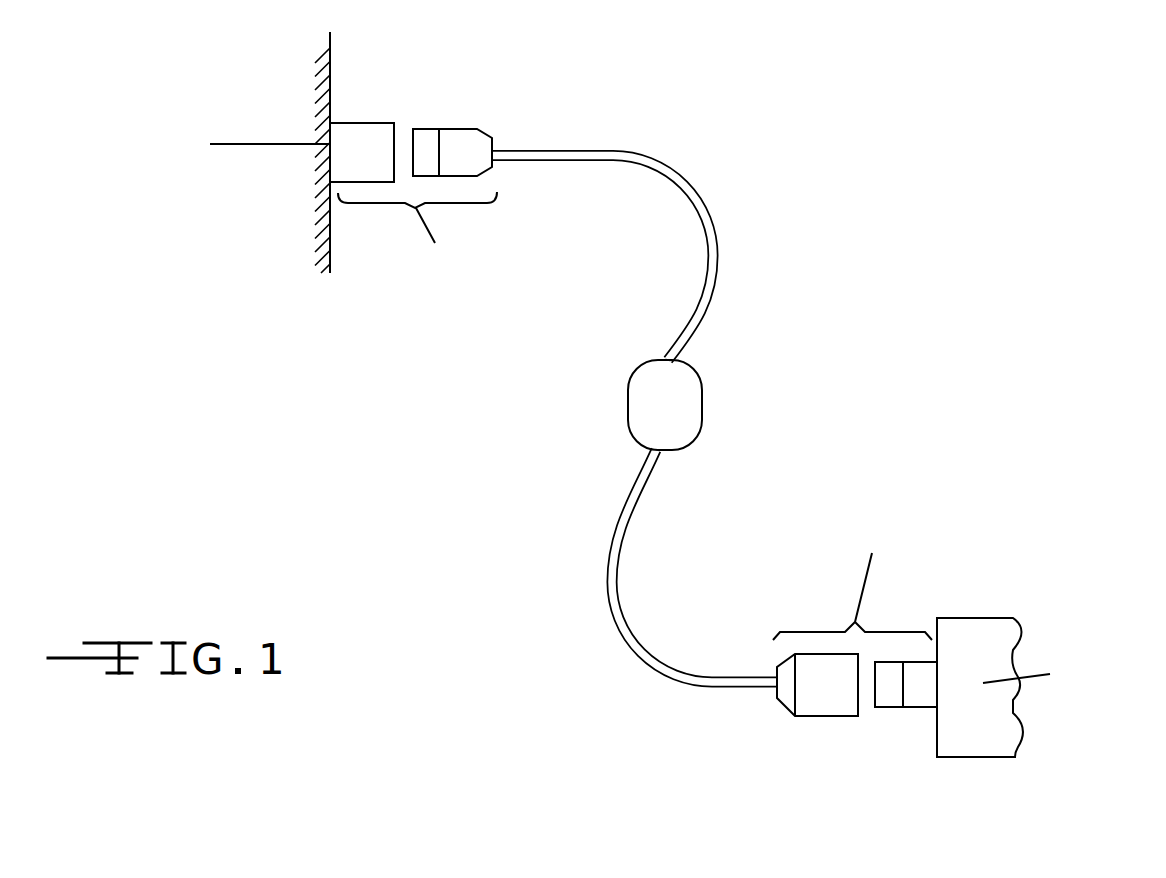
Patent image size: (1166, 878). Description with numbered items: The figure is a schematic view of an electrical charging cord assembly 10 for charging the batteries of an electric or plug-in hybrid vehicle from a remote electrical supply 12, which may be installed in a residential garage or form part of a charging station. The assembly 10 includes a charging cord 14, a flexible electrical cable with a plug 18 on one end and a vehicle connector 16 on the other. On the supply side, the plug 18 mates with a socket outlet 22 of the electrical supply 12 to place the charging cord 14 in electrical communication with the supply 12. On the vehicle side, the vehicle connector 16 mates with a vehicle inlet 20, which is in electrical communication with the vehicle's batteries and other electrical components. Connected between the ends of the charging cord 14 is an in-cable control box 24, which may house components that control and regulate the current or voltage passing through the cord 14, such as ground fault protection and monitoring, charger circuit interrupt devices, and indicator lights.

The electrical charging cord assembly 10 is at (762, 172).
The electrical supply 12 is at (181, 158).
The charging cord 14 is at (611, 565).
The vehicle connector 16 is at (832, 697).
The plug 18 is at (448, 147).
The vehicle inlet 20 is at (918, 695).
The socket outlet 22 is at (360, 138).
The in-cable control box 24 is at (677, 408).